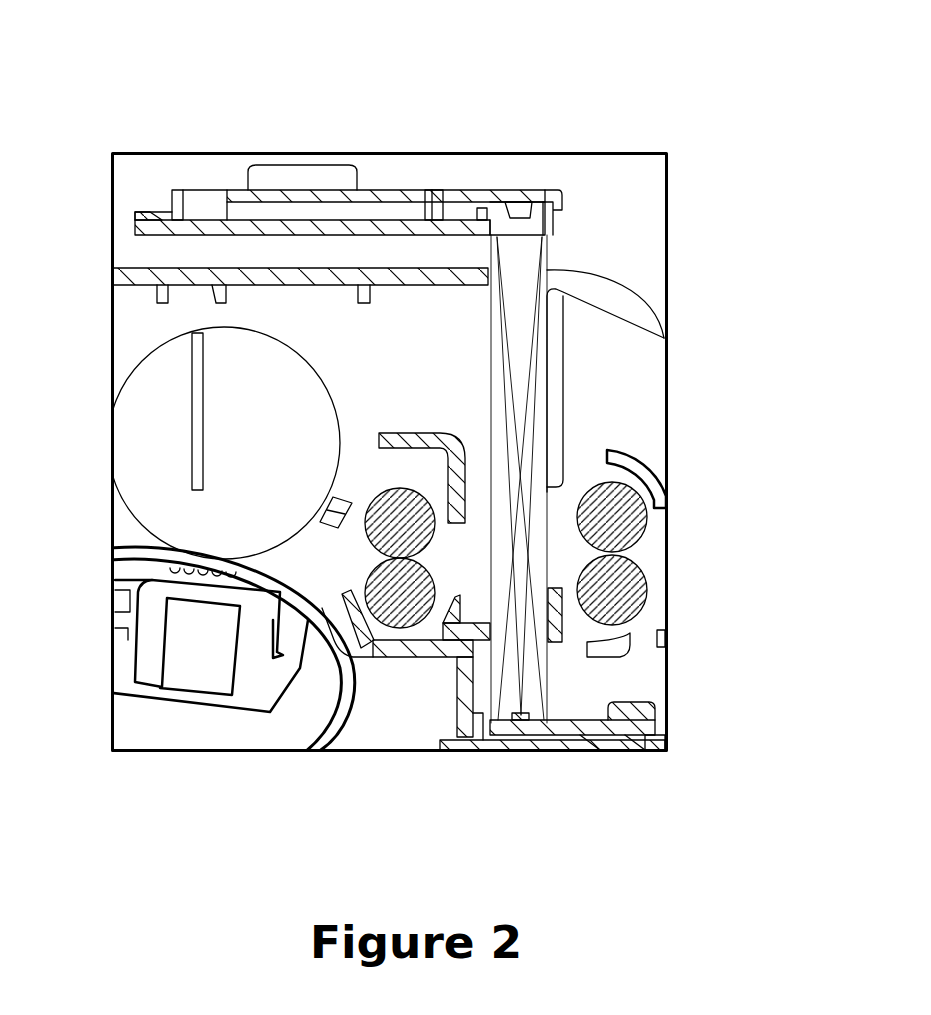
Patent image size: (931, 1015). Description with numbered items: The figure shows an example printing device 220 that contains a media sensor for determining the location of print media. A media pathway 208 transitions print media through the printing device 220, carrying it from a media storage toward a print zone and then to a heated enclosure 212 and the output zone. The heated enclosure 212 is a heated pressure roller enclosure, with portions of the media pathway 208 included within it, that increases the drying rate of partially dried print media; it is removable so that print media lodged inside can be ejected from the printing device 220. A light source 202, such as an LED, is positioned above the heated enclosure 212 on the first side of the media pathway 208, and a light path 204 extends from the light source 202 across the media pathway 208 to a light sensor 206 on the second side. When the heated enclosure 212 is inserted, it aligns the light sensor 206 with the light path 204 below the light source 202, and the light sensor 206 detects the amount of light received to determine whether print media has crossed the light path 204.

The printing device 220 is at (138, 86).
The light source 202 is at (521, 212).
The light path 204 is at (520, 486).
The light sensor 206 is at (517, 727).
The media pathway 208 is at (234, 607).
The heated enclosure 212 is at (313, 685).